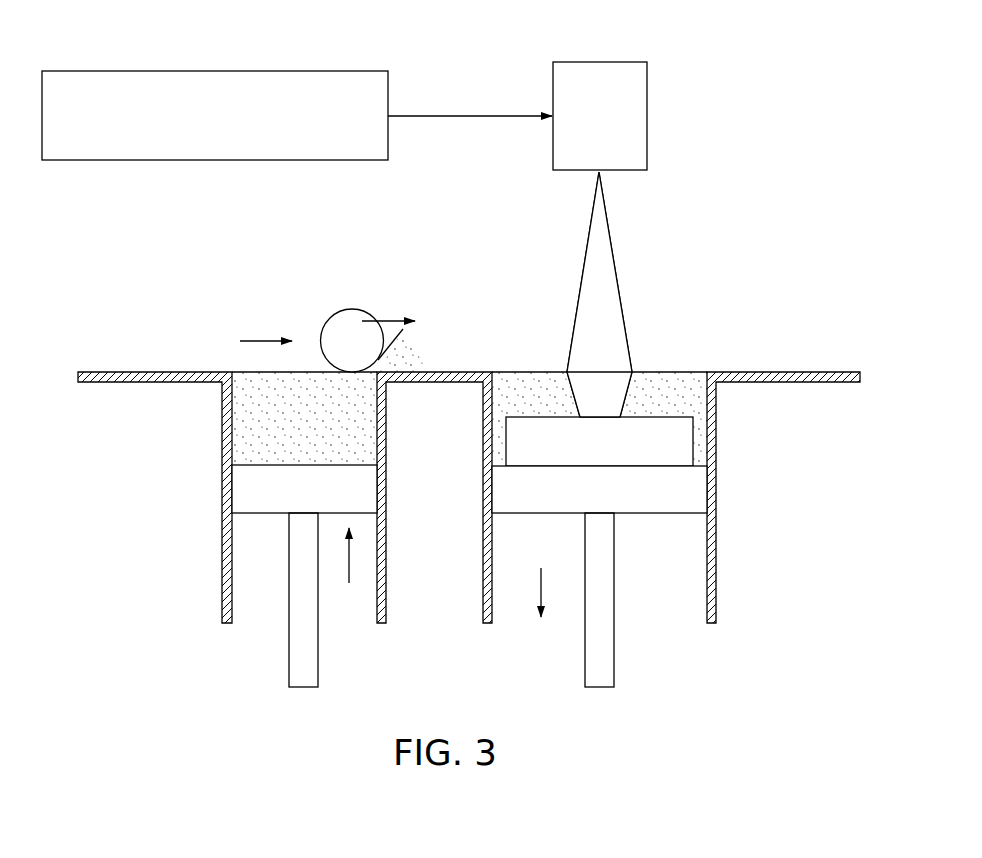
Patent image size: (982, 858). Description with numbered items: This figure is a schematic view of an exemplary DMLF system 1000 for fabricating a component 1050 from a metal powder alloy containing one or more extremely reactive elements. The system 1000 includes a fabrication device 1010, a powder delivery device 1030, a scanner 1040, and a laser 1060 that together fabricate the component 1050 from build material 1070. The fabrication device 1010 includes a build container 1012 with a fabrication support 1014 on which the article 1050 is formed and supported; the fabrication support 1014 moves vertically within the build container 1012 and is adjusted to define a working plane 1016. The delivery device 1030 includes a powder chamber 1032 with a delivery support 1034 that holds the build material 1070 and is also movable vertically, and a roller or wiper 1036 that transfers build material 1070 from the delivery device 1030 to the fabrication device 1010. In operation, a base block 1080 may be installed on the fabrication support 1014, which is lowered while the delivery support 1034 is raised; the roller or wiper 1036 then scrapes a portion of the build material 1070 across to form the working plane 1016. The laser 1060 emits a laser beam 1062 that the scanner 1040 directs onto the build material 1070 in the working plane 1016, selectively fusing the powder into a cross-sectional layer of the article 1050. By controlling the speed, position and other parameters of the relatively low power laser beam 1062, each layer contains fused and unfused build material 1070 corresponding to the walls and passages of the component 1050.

The DMLF system 1000 is at (807, 41).
The fabrication device 1010 is at (676, 500).
The build container 1012 is at (712, 396).
The fabrication support 1014 is at (678, 513).
The working plane 1016 is at (680, 372).
The powder delivery device 1030 is at (257, 473).
The powder chamber 1032 is at (232, 432).
The delivery support 1034 is at (242, 495).
The roller or wiper 1036 is at (352, 309).
The scanner 1040 is at (601, 62).
The component 1050 is at (521, 326).
The laser 1060 is at (211, 71).
The laser beam 1062 is at (470, 116).
The build material 1070 is at (240, 408).
The base block 1080 is at (568, 462).